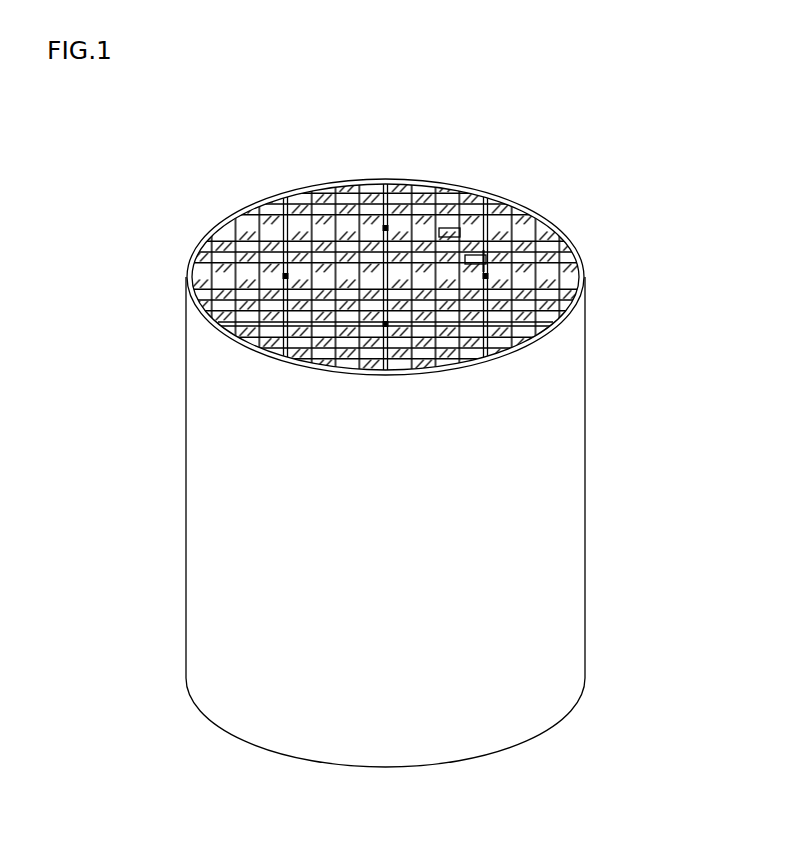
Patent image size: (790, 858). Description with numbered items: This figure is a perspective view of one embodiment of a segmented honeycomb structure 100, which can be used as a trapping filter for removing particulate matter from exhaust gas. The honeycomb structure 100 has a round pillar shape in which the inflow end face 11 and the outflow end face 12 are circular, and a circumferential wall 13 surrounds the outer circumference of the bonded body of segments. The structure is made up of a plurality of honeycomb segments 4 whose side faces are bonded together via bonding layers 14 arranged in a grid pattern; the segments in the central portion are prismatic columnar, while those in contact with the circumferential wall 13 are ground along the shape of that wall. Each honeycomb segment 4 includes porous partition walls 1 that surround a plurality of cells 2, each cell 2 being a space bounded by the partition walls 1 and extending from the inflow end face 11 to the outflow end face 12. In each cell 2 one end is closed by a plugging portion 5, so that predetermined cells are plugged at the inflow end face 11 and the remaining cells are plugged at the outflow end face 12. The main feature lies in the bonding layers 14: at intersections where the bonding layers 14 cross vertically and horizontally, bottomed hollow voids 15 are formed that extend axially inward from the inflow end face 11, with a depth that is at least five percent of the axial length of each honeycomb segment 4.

The honeycomb structure 100 is at (693, 103).
The partition walls 1 is at (483, 268).
The cells 2 is at (482, 257).
The honeycomb segments 4 is at (218, 226).
The plugging portion 5 is at (442, 232).
The inflow end face 11 is at (234, 204).
The outflow end face 12 is at (225, 735).
The circumferential wall 13 is at (537, 393).
The bonding layers 14 is at (290, 204).
The voids 15 is at (385, 227).